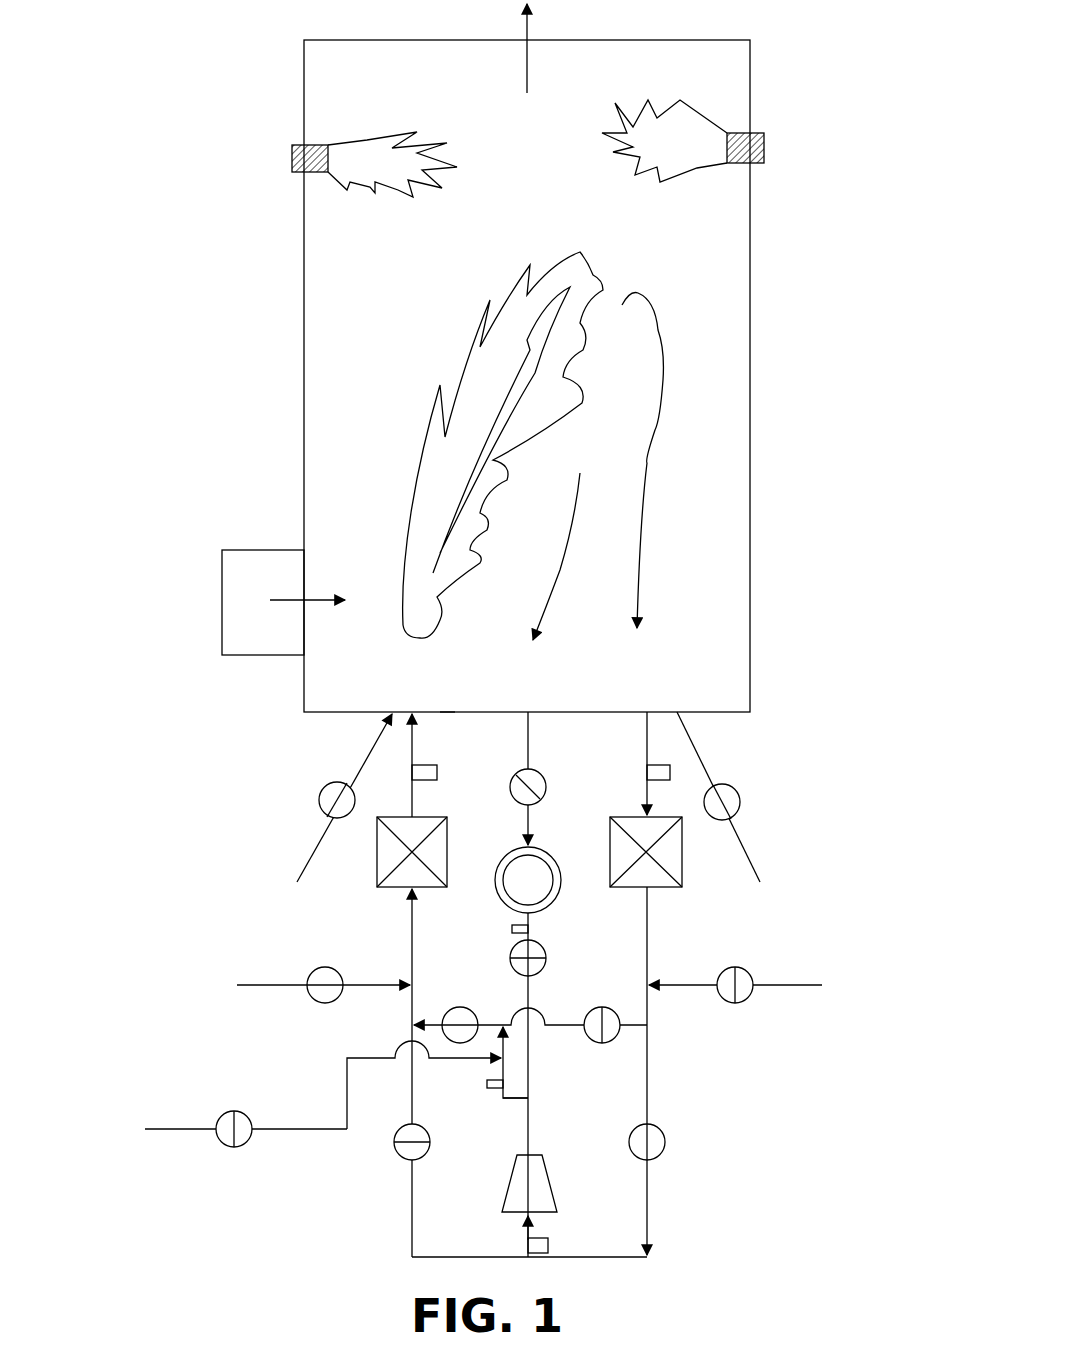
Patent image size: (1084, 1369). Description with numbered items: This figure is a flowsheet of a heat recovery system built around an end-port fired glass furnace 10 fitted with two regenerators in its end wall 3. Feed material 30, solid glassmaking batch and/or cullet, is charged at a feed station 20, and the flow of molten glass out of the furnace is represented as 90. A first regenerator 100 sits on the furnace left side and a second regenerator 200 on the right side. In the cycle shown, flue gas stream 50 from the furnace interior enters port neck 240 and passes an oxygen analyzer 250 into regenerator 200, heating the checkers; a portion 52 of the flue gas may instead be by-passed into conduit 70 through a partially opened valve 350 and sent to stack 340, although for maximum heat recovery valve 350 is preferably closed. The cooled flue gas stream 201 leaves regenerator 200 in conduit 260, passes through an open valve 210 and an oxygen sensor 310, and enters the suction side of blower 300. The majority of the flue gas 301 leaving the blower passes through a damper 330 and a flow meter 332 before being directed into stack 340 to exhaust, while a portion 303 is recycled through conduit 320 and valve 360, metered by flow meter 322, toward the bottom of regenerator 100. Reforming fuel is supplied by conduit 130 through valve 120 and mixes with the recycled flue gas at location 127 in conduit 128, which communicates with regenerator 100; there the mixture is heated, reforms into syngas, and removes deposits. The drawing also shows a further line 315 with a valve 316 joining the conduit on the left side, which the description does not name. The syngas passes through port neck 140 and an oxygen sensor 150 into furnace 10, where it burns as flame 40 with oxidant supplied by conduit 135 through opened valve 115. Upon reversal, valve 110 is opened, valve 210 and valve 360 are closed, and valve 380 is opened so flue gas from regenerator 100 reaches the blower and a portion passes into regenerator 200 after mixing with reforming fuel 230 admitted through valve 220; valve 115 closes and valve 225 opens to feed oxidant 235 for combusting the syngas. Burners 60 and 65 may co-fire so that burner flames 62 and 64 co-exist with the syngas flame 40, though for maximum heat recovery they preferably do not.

The end wall 3 is at (447, 712).
The glass furnace 10 is at (750, 338).
The feed station 20 is at (263, 550).
The feed material 30 is at (318, 598).
The syngas flame 40 is at (503, 445).
The flue gas stream 50 is at (648, 462).
The by-passed flue gas portion 52 is at (566, 556).
The burner 60 is at (292, 145).
The burner flame 62 is at (352, 183).
The burner flame 64 is at (617, 153).
The burner 65 is at (758, 133).
The conduit 70 is at (528, 730).
The molten glass flow 90 is at (547, 48).
The first regenerator 100 is at (378, 887).
The valve 110 is at (394, 1142).
The valve 115 is at (325, 790).
The valve 120 is at (323, 1003).
The mixing location 127 is at (412, 965).
The conduit 128 is at (412, 917).
The reforming fuel conduit 130 is at (255, 985).
The oxidant conduit 135 is at (308, 855).
The port neck 140 is at (435, 765).
The oxygen sensor 150 is at (437, 770).
The second regenerator 200 is at (682, 870).
The cooled flue gas stream 201 is at (647, 947).
The valve 210 is at (665, 1142).
The valve 220 is at (738, 1003).
The valve 225 is at (740, 802).
The reforming fuel 230 is at (822, 985).
The oxidant 235 is at (760, 862).
The port neck 240 is at (647, 733).
The oxygen analyzer 250 is at (670, 770).
The conduit 260 is at (647, 1070).
The blower 300 is at (555, 1193).
The flue gas 301 is at (537, 1057).
The recycled flue gas portion 303 is at (518, 1087).
The oxygen sensor 310 is at (548, 1238).
The line 315 is at (192, 1129).
The valve 316 is at (234, 1147).
The conduit 320 is at (498, 1076).
The flow meter 322 is at (487, 1082).
The damper 330 is at (546, 958).
The flow meter 332 is at (512, 929).
The stack 340 is at (551, 880).
The valve 350 is at (546, 787).
The valve 360 is at (458, 1007).
The valve 380 is at (590, 1007).